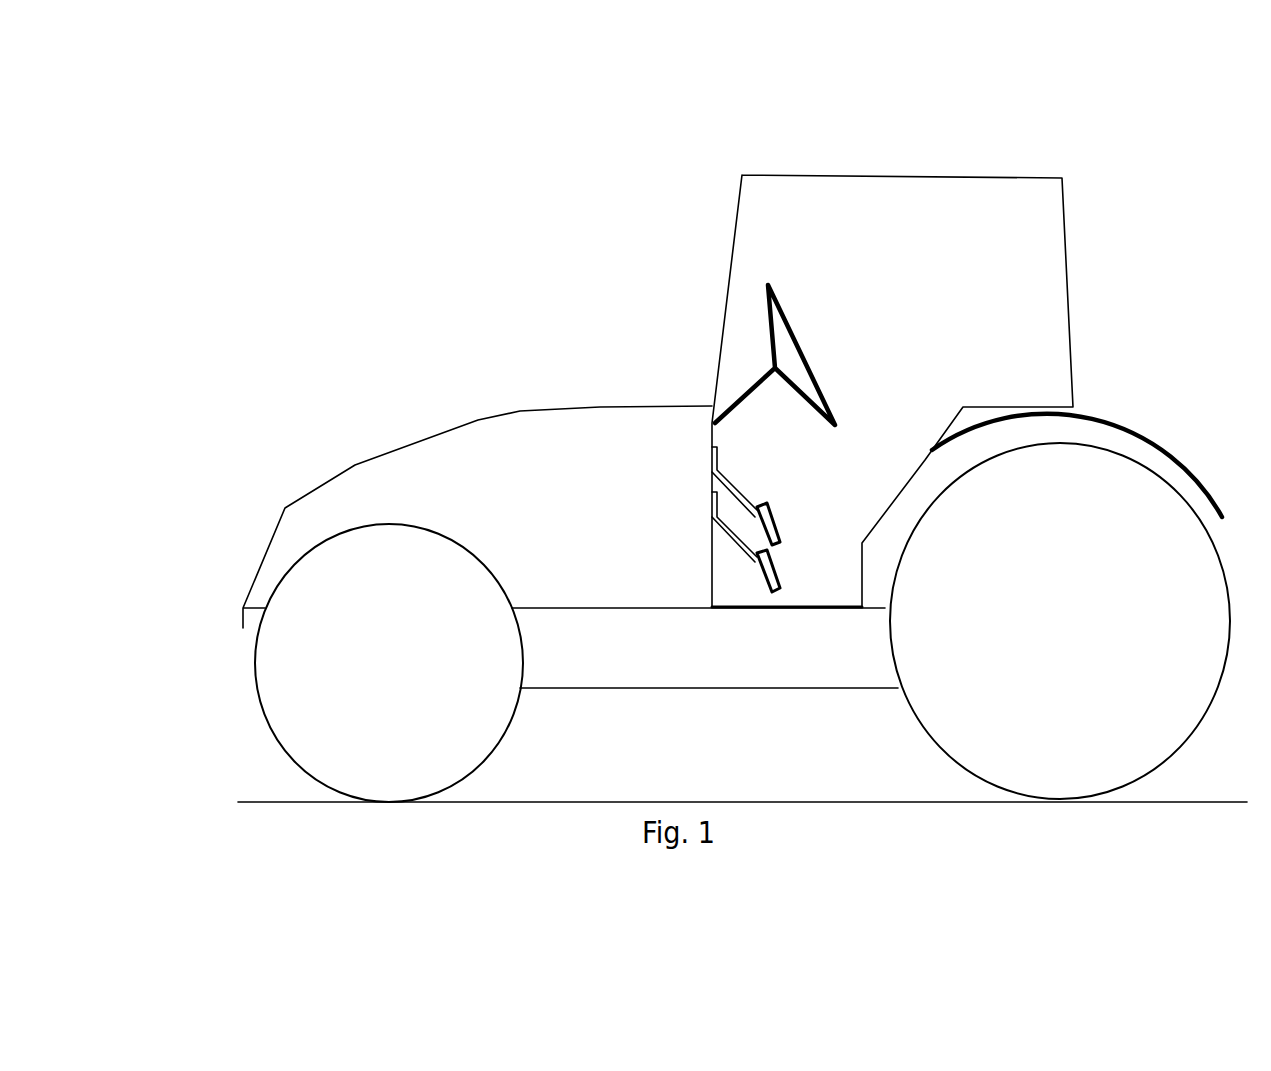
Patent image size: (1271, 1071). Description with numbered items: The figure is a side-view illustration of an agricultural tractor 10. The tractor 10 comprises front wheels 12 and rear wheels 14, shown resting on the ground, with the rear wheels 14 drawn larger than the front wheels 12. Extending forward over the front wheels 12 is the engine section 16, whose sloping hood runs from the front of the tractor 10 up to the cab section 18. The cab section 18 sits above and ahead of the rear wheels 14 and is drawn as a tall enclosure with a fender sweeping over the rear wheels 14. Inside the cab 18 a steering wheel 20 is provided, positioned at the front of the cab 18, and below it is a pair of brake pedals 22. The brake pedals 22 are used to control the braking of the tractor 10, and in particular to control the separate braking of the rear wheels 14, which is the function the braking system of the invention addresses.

The agricultural tractor 10 is at (300, 168).
The front wheels 12 is at (378, 782).
The rear wheels 14 is at (1093, 753).
The engine section 16 is at (407, 453).
The cab section 18 is at (1017, 272).
The steering wheel 20 is at (770, 322).
The brake pedals 22 is at (712, 508).